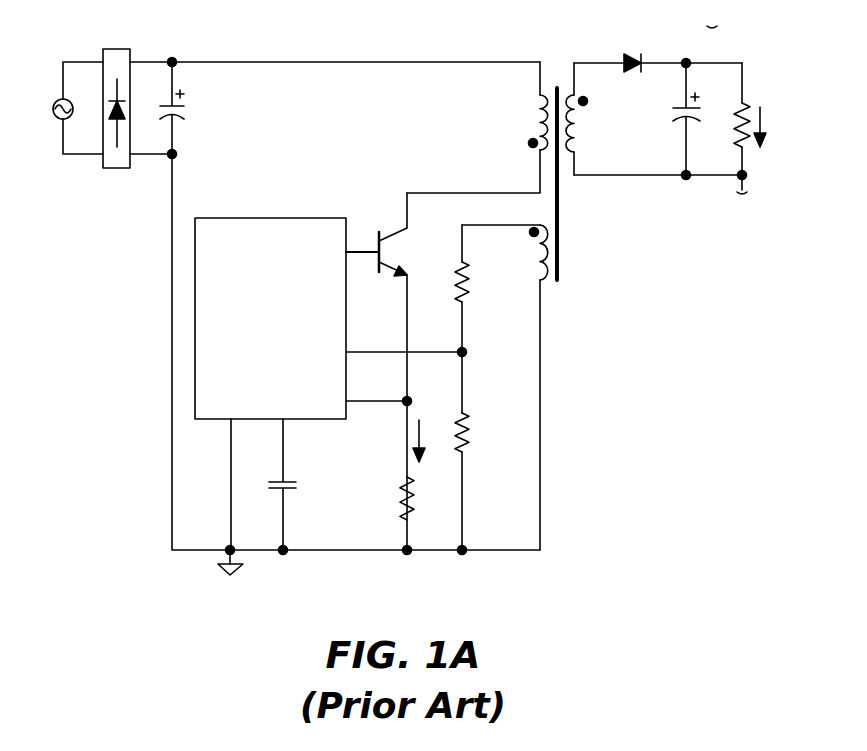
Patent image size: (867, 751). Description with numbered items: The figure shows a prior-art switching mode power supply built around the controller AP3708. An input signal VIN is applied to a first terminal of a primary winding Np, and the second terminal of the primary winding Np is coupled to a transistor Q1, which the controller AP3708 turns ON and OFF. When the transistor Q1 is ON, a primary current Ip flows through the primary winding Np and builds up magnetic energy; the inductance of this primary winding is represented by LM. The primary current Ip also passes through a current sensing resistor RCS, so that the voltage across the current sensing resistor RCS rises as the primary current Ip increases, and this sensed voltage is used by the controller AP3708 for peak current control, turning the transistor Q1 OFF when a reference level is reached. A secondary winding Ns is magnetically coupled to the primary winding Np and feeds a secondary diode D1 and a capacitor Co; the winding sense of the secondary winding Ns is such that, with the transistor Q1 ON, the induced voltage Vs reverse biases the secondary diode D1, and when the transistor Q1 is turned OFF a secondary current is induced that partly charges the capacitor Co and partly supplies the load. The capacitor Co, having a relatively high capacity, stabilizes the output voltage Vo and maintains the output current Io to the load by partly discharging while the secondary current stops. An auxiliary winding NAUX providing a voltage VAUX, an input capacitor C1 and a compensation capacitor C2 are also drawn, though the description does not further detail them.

The input bulk capacitor C1 is at (189, 108).
The compensation capacitor C2 is at (299, 484).
The controller AP3708 is at (331, 384).
The transistor Q1 is at (387, 371).
The primary current Ip is at (428, 441).
The current sensing resistor RCS is at (426, 498).
The primary winding Np is at (477, 127).
The inductance of the primary winding LM is at (488, 130).
The input signal VIN is at (509, 45).
The auxiliary winding NAUX is at (505, 387).
The auxiliary winding voltage VAUX is at (528, 208).
The secondary winding Ns is at (587, 119).
The secondary voltage Vs is at (578, 48).
The secondary diode D1 is at (636, 50).
The capacitor Co is at (671, 119).
The voltage Vo is at (744, 106).
The output current Io is at (769, 126).